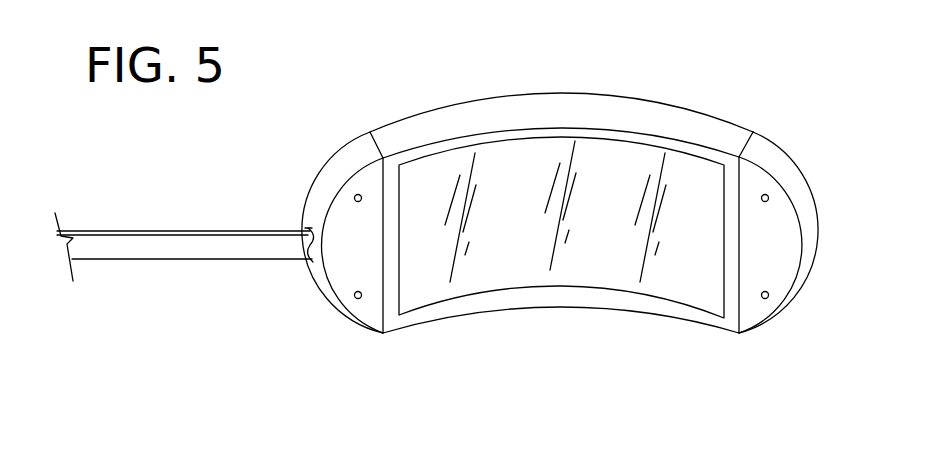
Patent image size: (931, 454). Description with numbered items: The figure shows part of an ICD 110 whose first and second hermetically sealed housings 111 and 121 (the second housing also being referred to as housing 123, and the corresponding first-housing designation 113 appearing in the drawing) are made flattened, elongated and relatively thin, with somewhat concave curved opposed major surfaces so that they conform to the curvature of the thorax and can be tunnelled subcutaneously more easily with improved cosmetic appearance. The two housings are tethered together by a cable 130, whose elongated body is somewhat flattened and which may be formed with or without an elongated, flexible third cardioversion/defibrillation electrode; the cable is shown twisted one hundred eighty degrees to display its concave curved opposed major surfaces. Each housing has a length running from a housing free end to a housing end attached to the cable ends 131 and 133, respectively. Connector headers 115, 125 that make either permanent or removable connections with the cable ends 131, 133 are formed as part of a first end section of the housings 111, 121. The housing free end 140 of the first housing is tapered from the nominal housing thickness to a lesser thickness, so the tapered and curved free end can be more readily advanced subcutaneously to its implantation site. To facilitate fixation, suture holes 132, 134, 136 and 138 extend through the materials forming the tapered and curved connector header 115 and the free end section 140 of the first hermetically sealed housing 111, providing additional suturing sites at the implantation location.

The ICD 110 is at (385, 65).
The first hermetically sealed housing 111 is at (561, 266).
The second hermetically sealed housing 121 is at (561, 326).
The lens 113 is at (556, 262).
The second hermetically sealed housing 123 is at (527, 265).
The connector header 115 is at (287, 257).
The connector header 125 is at (345, 252).
The cable 130 is at (161, 290).
The cable end 131 is at (244, 222).
The cable end 133 is at (303, 229).
The suture hole 132 is at (358, 299).
The suture hole 134 is at (355, 194).
The suture hole 136 is at (769, 297).
The suture hole 138 is at (768, 196).
The housing free end 140 is at (780, 243).